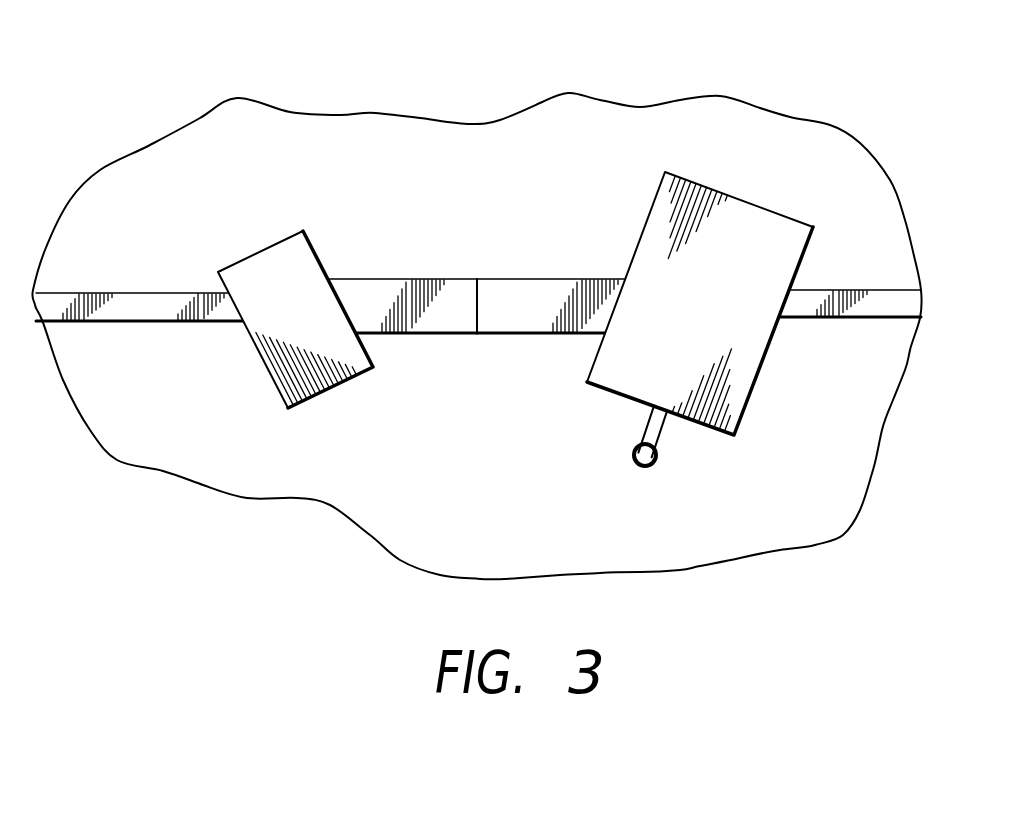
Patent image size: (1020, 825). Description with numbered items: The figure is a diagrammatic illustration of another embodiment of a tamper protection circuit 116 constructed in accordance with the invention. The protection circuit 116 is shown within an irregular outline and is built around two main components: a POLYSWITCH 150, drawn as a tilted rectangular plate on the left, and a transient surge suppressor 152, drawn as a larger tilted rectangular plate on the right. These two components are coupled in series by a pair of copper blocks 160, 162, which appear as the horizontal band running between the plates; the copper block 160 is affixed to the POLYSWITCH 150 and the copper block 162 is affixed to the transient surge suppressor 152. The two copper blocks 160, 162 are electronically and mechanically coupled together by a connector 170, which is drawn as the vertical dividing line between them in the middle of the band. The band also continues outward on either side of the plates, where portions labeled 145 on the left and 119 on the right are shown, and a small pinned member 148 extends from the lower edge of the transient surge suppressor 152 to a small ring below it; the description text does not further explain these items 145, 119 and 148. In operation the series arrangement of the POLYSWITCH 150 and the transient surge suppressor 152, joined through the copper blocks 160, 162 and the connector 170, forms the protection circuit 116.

The protection circuit 116 is at (808, 100).
The carrier strip 119 is at (858, 300).
The carrier strip portion 145 is at (177, 322).
The pivot pin 148 is at (631, 455).
The POLYSWITCH 150 is at (256, 273).
The transient surge suppressor 152 is at (733, 200).
The copper block 160 is at (367, 293).
The copper block 162 is at (530, 293).
The connector 170 is at (477, 300).